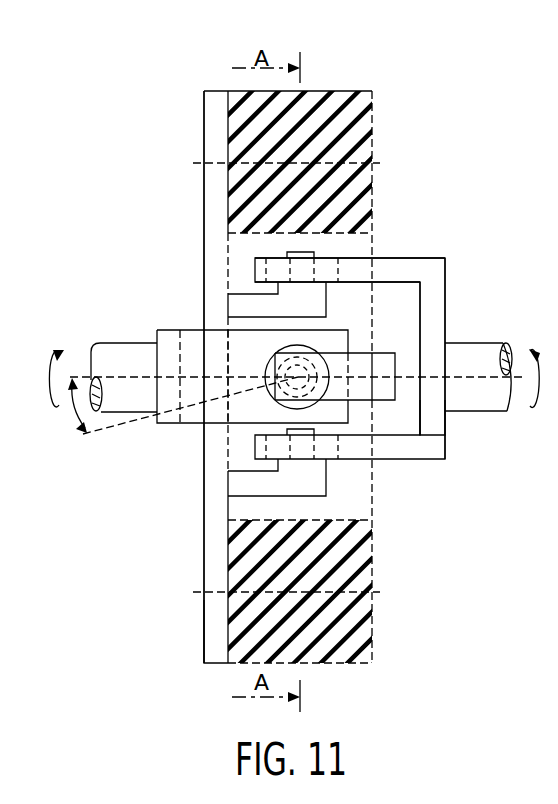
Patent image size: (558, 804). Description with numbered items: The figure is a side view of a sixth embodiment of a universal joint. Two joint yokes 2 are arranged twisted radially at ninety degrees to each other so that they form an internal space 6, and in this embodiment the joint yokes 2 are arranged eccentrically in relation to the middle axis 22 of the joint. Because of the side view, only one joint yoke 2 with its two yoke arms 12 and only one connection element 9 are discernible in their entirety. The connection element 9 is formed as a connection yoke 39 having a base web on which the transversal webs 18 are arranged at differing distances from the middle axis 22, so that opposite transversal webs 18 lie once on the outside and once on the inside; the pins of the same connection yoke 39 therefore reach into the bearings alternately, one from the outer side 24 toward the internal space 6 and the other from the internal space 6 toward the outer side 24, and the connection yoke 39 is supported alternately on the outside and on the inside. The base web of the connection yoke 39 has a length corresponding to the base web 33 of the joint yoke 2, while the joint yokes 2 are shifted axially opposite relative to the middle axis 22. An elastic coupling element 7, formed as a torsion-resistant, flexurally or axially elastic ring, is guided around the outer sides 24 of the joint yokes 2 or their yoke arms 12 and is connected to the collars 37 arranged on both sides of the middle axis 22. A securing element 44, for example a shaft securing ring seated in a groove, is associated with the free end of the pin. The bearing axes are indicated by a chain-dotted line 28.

The joint yoke 2 is at (433, 297).
The internal space 6 is at (400, 418).
The elastic coupling element 7 is at (372, 630).
The connection element 9 is at (216, 200).
The yoke arm 12 is at (386, 268).
The transversal web 18 is at (248, 481).
The middle axis of the joint 22 is at (474, 373).
The outer side 24 is at (435, 258).
The chain-dotted line 28 is at (200, 589).
The base web of the joint yoke 33 is at (430, 416).
The collar 37 is at (213, 624).
The connection yoke 39 is at (288, 377).
The securing element 44 is at (287, 256).